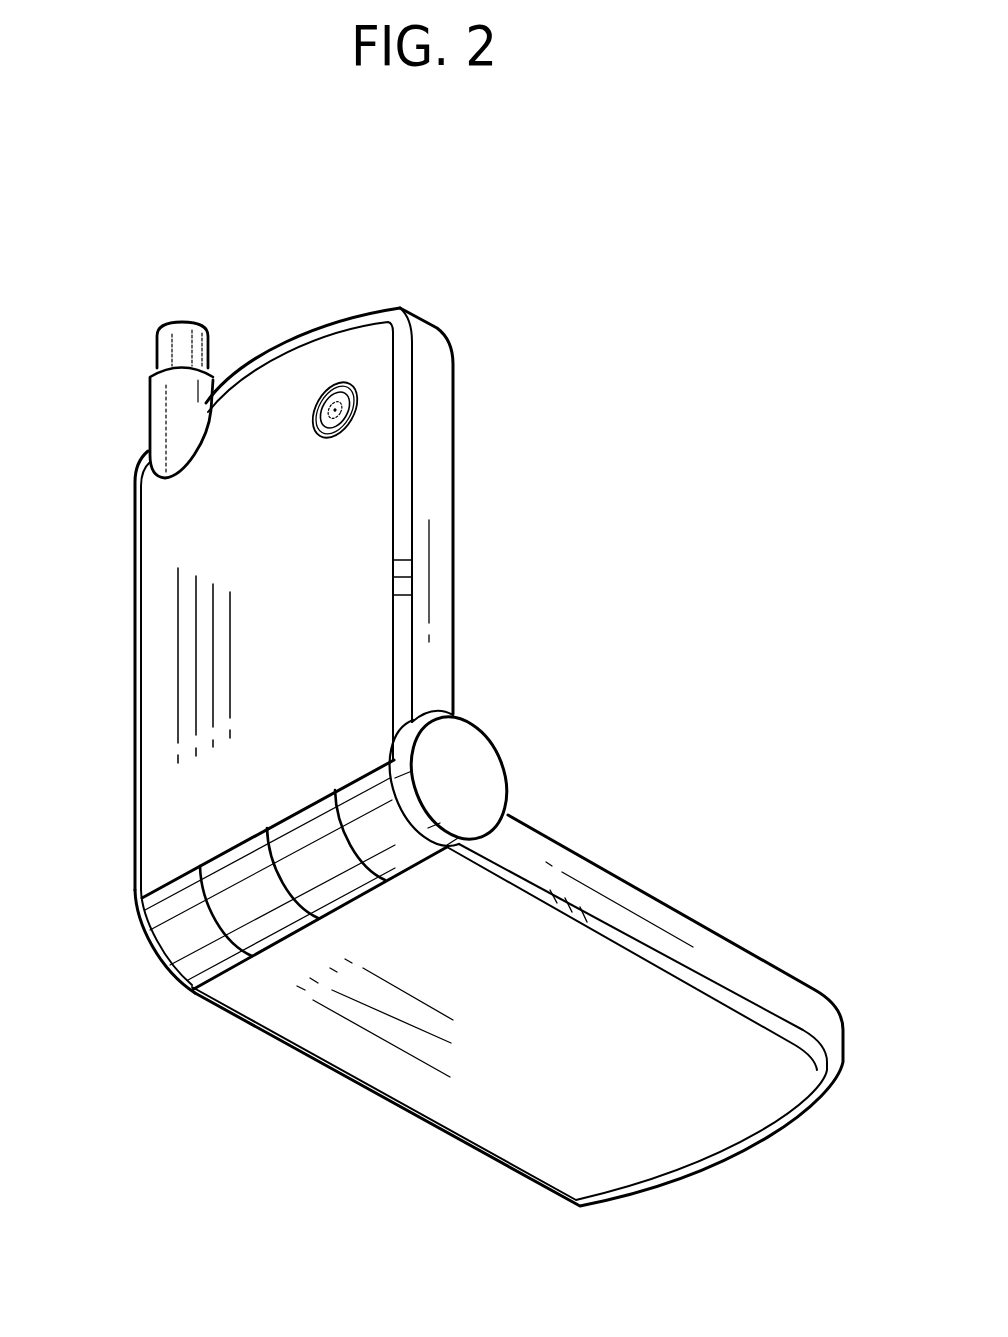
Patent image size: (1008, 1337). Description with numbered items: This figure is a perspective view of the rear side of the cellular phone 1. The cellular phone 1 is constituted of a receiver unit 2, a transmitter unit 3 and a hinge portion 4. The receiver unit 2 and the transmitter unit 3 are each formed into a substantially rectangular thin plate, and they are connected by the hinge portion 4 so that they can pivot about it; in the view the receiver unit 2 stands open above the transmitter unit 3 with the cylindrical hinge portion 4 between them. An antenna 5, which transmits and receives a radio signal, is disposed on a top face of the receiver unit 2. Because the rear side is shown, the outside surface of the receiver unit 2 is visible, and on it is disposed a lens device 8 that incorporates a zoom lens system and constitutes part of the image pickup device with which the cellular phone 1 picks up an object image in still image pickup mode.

The cellular phone 1 is at (708, 618).
The receiver unit 2 is at (470, 507).
The transmitter unit 3 is at (742, 944).
The hinge portion 4 is at (499, 765).
The antenna 5 is at (166, 350).
The lens device 8 is at (352, 418).